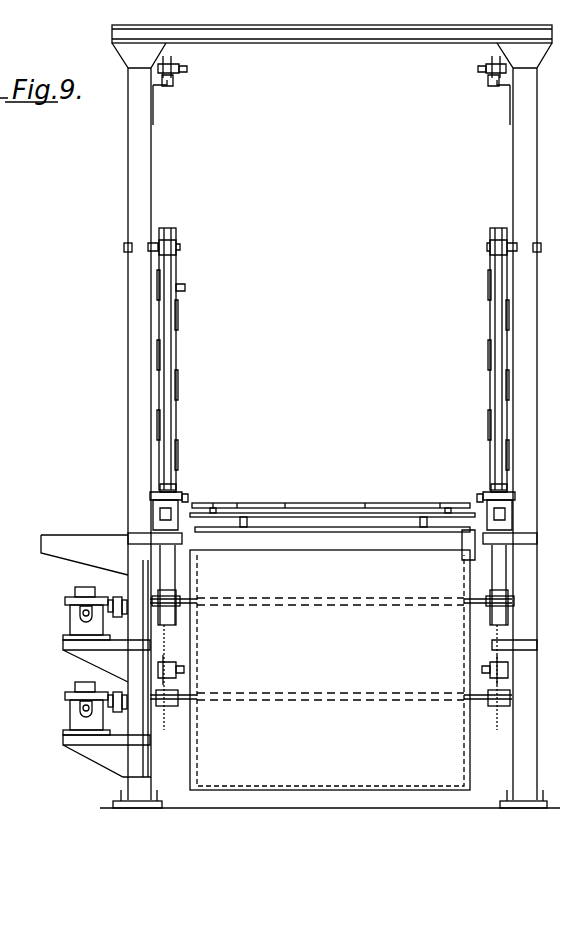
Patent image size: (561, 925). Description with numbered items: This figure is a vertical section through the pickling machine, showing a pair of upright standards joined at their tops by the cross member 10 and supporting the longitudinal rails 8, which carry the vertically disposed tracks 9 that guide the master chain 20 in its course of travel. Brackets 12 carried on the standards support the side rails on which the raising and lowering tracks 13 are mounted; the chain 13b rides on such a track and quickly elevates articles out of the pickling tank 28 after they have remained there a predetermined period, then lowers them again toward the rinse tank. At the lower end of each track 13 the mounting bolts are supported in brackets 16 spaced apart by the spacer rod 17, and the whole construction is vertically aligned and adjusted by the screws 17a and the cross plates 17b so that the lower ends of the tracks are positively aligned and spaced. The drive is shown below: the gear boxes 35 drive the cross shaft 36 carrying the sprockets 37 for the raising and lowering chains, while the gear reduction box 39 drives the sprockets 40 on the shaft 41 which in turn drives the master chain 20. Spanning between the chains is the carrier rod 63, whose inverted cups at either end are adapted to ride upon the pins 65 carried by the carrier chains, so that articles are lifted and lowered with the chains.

The longitudinal rail 8 is at (160, 86).
The vertically disposed track 9 is at (172, 84).
The cross member 10 is at (320, 34).
The bracket 12 is at (133, 540).
The raising and lowering track 13 is at (173, 288).
The chain 13b is at (170, 237).
The bracket 16 is at (186, 496).
The spacer rod 17 is at (153, 516).
The screw 17a is at (172, 488).
The cross plate 17b is at (150, 497).
The master chain 20 is at (172, 64).
The pickling tank 28 is at (191, 766).
The gear box 35 is at (70, 615).
The cross shaft 36 is at (258, 598).
The sprocket 37 is at (180, 602).
The gear reduction box 39 is at (70, 708).
The sprocket 40 is at (178, 697).
The shaft 41 is at (262, 694).
The rod 63 is at (224, 503).
The pin 65 is at (188, 69).